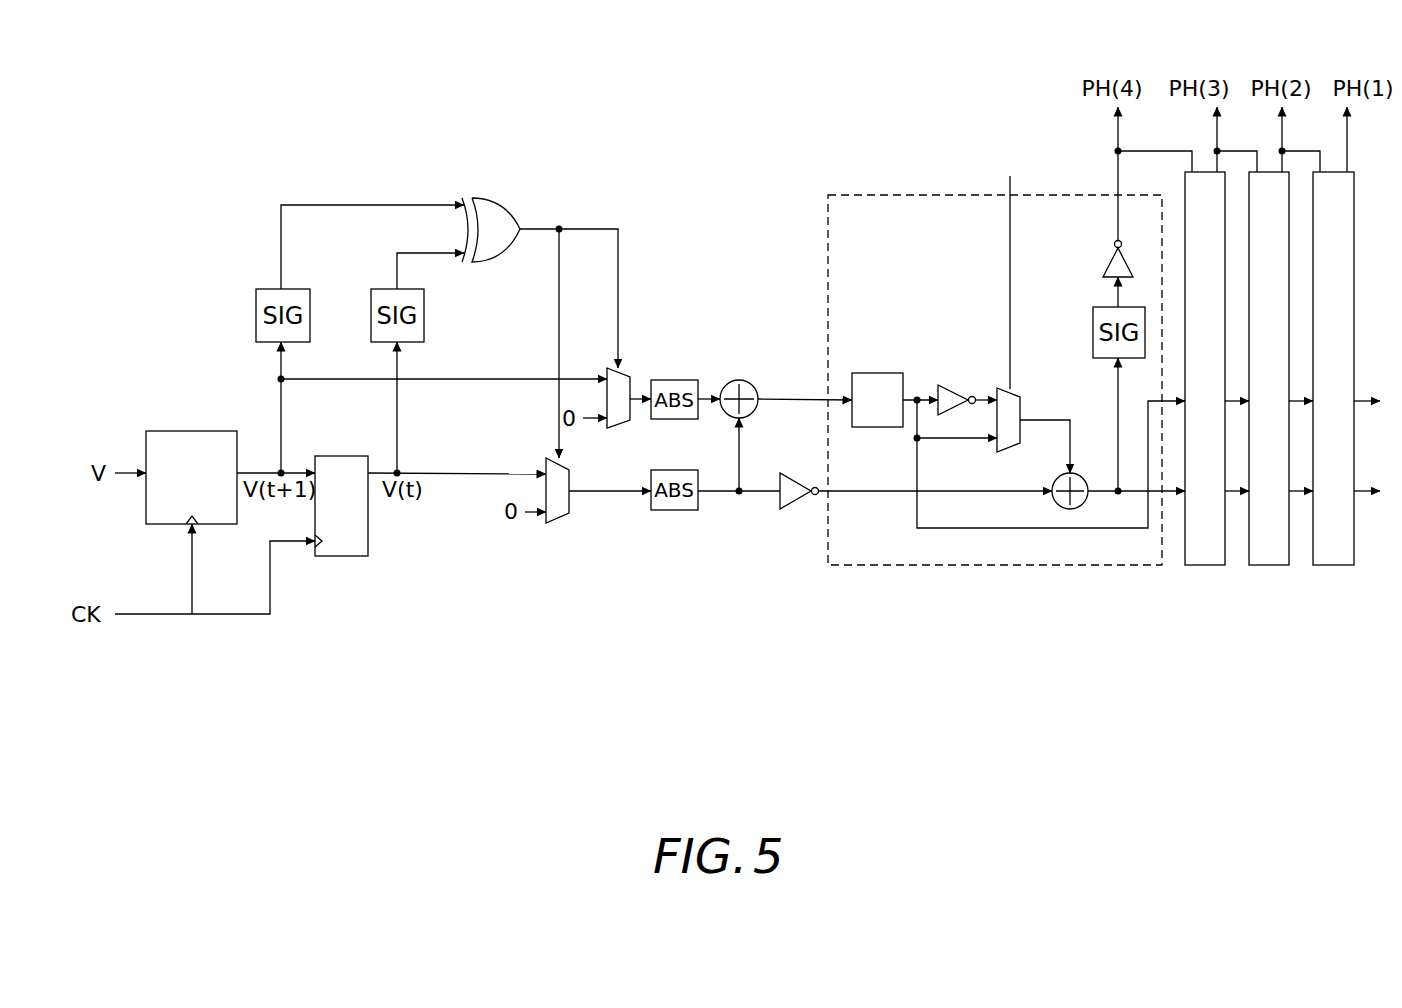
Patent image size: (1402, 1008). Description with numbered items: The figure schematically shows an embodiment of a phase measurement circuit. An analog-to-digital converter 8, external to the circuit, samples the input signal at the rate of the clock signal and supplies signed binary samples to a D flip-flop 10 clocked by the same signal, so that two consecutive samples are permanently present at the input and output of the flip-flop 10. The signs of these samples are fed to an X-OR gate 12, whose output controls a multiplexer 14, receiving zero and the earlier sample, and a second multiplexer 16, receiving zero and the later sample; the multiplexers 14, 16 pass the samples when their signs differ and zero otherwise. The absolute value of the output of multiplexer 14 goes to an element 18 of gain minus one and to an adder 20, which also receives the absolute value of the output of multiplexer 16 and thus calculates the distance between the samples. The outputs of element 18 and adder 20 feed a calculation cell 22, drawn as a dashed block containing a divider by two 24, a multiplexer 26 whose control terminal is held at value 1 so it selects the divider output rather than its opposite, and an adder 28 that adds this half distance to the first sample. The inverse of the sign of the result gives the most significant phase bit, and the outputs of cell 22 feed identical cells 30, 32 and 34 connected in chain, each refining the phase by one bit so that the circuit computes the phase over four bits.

The value 1 is at (1010, 269).
The analog-to-digital converter 8 is at (187, 436).
The D flip-flop 10 is at (352, 557).
The X-OR gate 12 is at (500, 212).
The multiplexer 14 is at (549, 526).
The second multiplexer 16 is at (612, 430).
The element of gain −1 18 is at (797, 512).
The adder 20 is at (741, 379).
The calculation cell 22 is at (887, 566).
The divider by two 24 is at (890, 372).
The multiplexer 26 is at (1022, 411).
The adder 28 is at (1079, 511).
The cell 30 is at (1205, 566).
The calculation cell 32 is at (1271, 566).
The calculation cell 34 is at (1334, 566).